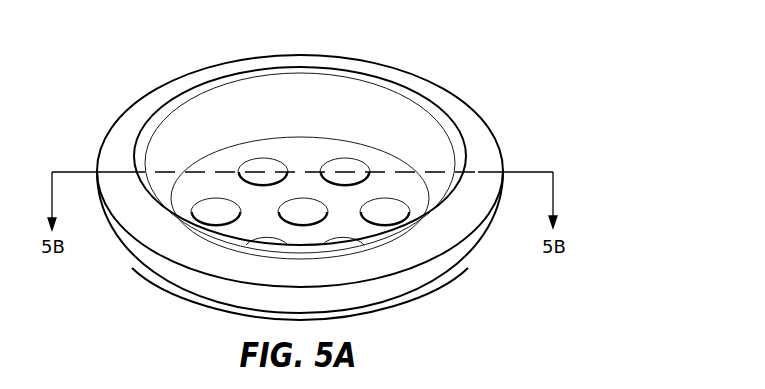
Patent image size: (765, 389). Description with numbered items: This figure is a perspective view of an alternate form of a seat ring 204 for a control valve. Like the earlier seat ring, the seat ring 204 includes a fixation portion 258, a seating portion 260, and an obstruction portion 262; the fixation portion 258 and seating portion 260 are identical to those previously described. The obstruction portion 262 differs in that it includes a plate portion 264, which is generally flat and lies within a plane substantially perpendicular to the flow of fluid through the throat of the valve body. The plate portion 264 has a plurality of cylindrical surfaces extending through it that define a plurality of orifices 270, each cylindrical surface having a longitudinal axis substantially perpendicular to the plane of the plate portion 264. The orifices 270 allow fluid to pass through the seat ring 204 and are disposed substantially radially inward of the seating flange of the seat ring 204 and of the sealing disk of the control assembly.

The seat ring 204 is at (486, 106).
The fixation portion 258 is at (484, 146).
The seating portion 260 is at (387, 67).
The obstruction portion 262 is at (210, 120).
The plate portion 264 is at (370, 230).
The orifices 270 is at (213, 210).